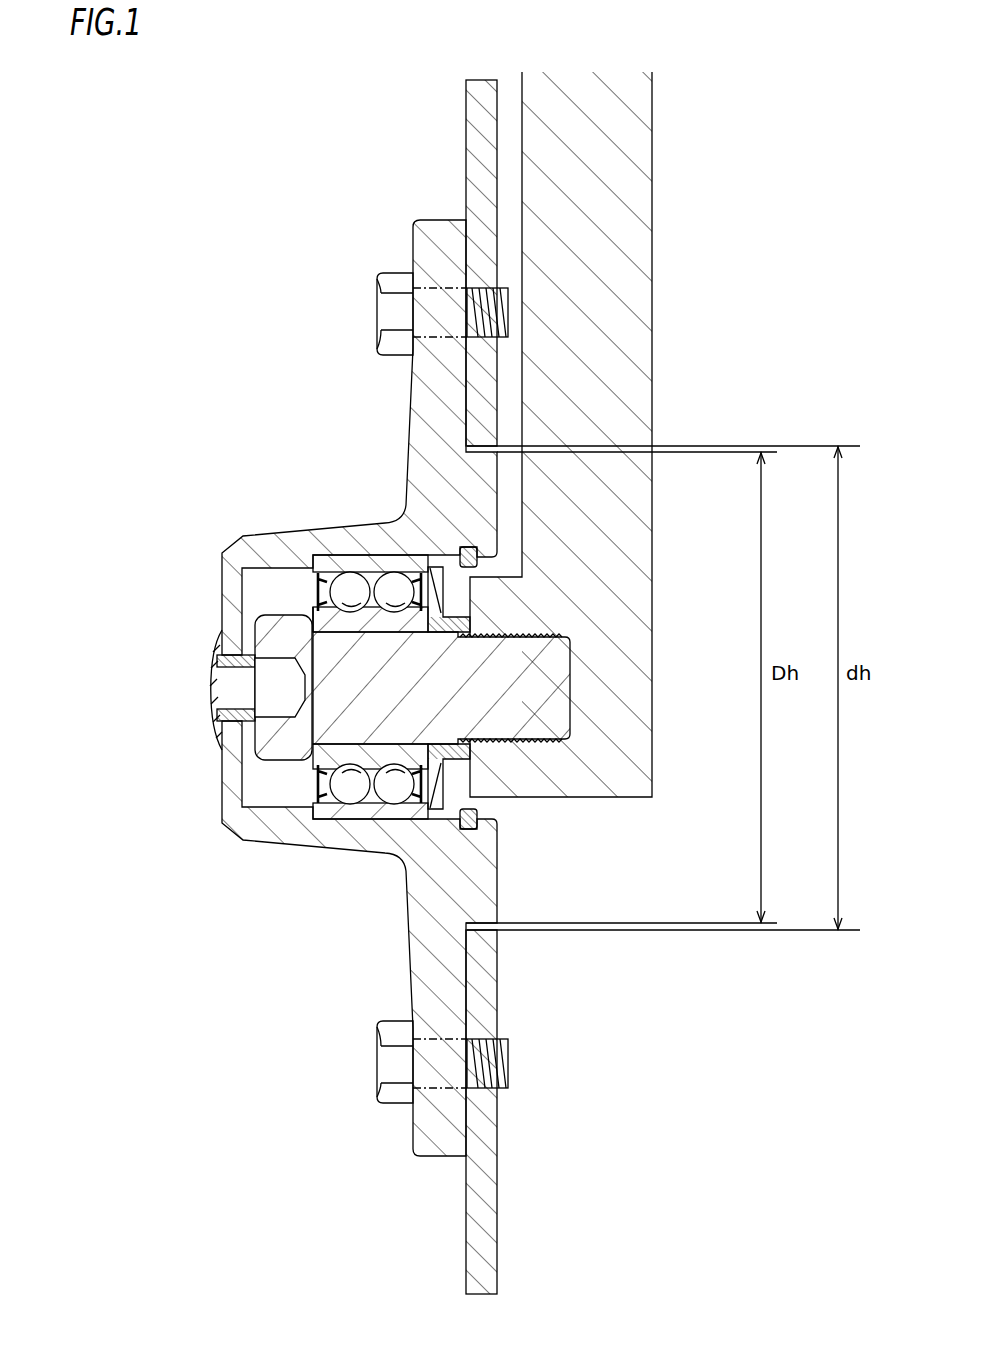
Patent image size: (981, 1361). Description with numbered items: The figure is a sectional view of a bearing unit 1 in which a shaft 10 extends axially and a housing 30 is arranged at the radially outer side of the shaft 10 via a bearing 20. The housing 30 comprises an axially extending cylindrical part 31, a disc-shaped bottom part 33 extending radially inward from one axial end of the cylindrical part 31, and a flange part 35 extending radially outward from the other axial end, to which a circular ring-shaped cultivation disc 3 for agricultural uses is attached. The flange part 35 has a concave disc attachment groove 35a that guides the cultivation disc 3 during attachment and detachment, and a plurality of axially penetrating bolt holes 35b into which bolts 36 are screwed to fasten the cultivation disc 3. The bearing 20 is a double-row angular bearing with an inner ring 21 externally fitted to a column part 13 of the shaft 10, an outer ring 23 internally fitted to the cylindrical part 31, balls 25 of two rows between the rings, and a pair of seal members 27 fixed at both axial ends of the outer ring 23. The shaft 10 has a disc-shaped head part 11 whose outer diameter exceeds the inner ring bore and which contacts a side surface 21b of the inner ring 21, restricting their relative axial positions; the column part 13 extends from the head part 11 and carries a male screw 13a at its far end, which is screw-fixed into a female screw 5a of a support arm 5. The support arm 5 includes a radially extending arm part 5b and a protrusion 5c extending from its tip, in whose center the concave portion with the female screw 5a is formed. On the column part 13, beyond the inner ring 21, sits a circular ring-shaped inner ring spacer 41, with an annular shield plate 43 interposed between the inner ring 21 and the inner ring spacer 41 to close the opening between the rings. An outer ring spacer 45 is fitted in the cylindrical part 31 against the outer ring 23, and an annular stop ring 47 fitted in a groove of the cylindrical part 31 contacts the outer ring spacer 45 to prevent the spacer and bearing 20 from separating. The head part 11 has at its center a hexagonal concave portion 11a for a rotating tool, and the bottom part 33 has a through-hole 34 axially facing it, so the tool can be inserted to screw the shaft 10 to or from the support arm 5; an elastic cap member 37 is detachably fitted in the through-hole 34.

The bearing unit 1 is at (178, 252).
The cultivation disc 3 is at (470, 112).
The support arm 5 is at (594, 463).
The female screw 5a is at (575, 658).
The arm part 5b is at (622, 336).
The protrusion 5c is at (558, 768).
The shaft 10 is at (441, 621).
The head part 11 is at (235, 679).
The concave portion 11a is at (265, 706).
The column part 13 is at (519, 678).
The male screw 13a is at (535, 640).
The bearing 20 is at (351, 686).
The inner ring 21 is at (351, 689).
The side surface 21b is at (305, 620).
The outer ring 23 is at (374, 566).
The balls 25 is at (349, 588).
The seal members 27 is at (310, 786).
The housing 30 is at (422, 686).
The cylindrical part 31 is at (313, 836).
The bottom part 33 is at (228, 769).
The through-hole 34 is at (228, 672).
The flange part 35 is at (465, 686).
The disc attachment groove 35a is at (481, 926).
The bolt holes 35b is at (433, 300).
The bolts 36 is at (392, 316).
The cap member 37 is at (210, 655).
The inner ring spacer 41 is at (448, 600).
The shield plate 43 is at (466, 783).
The outer ring spacer 45 is at (442, 570).
The stop ring 47 is at (478, 553).